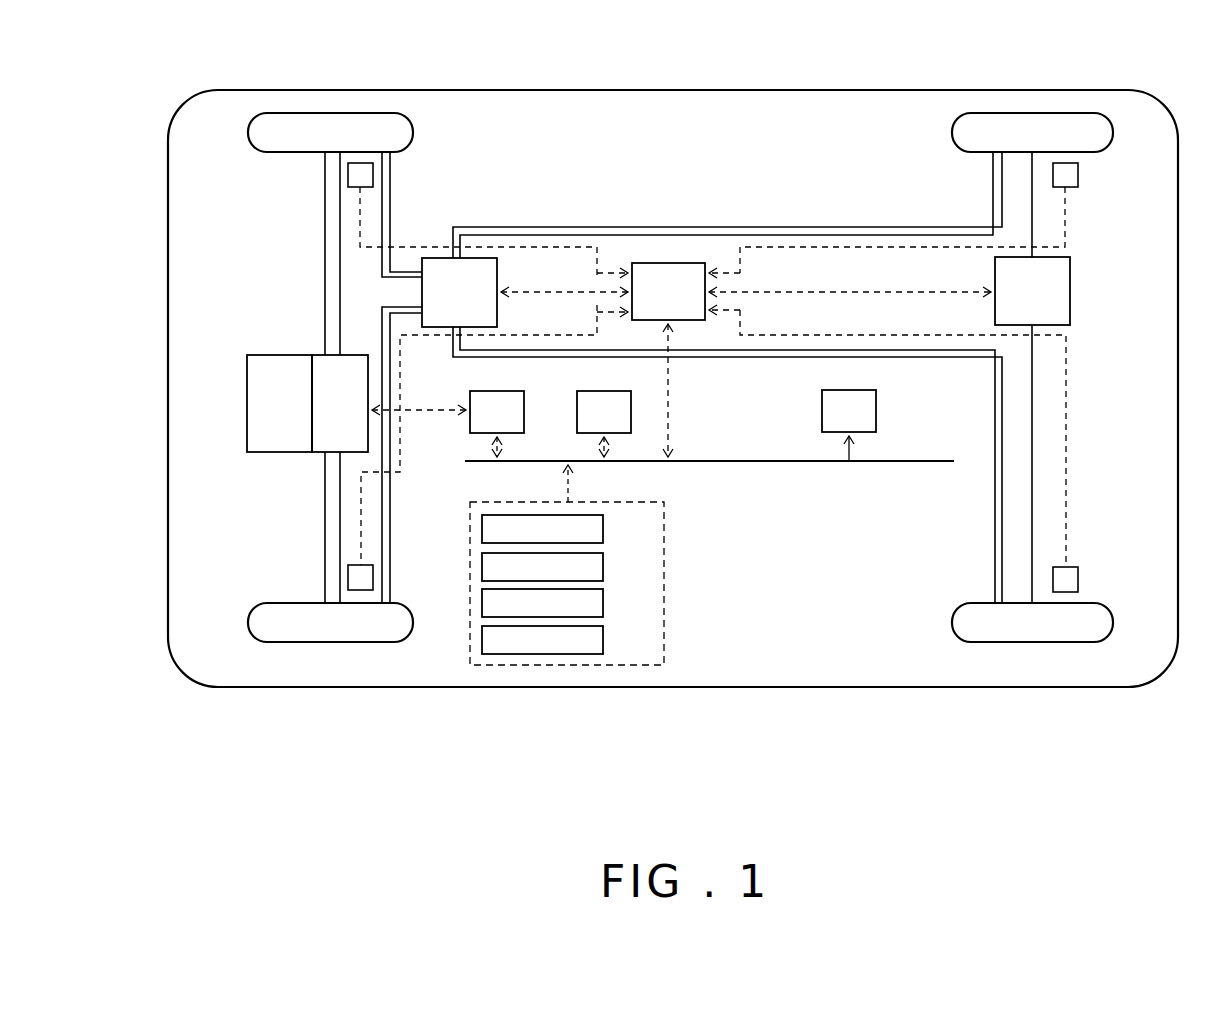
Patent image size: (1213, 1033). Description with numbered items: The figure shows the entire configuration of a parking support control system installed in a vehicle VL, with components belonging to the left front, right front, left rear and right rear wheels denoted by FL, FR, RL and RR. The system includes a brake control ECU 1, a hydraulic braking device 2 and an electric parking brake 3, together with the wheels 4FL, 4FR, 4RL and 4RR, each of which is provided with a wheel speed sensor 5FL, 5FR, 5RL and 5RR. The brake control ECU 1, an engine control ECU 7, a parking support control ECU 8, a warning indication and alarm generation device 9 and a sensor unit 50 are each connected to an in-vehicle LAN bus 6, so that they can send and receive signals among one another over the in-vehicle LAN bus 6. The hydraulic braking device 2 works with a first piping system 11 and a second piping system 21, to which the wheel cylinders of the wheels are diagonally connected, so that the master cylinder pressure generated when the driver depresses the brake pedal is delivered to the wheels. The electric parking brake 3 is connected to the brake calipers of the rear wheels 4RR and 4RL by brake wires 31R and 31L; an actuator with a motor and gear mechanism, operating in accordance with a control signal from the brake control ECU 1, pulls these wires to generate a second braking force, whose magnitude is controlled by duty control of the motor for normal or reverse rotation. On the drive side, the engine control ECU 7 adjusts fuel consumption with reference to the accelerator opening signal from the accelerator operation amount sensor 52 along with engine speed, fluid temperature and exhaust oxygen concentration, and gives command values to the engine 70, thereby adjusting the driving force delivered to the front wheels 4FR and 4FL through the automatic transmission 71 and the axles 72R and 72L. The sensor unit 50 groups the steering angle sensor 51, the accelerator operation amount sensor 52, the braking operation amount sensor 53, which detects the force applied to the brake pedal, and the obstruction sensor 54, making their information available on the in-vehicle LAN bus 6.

The vehicle VL is at (743, 80).
The brake control ECU 1 is at (665, 263).
The hydraulic braking device 2 is at (427, 258).
The electric parking brake 3 is at (1070, 268).
The right front wheel 4FR is at (325, 113).
The right rear wheel 4RR is at (1025, 113).
The left front wheel 4FL is at (325, 642).
The left rear wheel 4RL is at (1030, 642).
The wheel speed sensor 5FR is at (348, 178).
The wheel speed sensor 5RR is at (1078, 175).
The wheel speed sensor 5FL is at (348, 580).
The wheel speed sensor 5RL is at (1078, 580).
The in-vehicle LAN bus 6 is at (906, 461).
The engine control ECU 7 is at (505, 391).
The parking support control ECU 8 is at (608, 391).
The warning indication and alarm generation device 9 is at (855, 390).
The first piping system 11 is at (390, 172).
The second piping system 21 is at (993, 188).
The brake wire 31R is at (1032, 222).
The brake wire 31L is at (1032, 510).
The sensor unit 50 is at (470, 548).
The steering angle sensor 51 is at (603, 529).
The accelerator operation amount sensor 52 is at (603, 566).
The braking operation amount sensor 53 is at (603, 603).
The obstruction sensor 54 is at (603, 639).
The engine 70 is at (247, 405).
The automatic transmission 71 is at (313, 353).
The axle 72R is at (325, 232).
The axle 72L is at (325, 530).